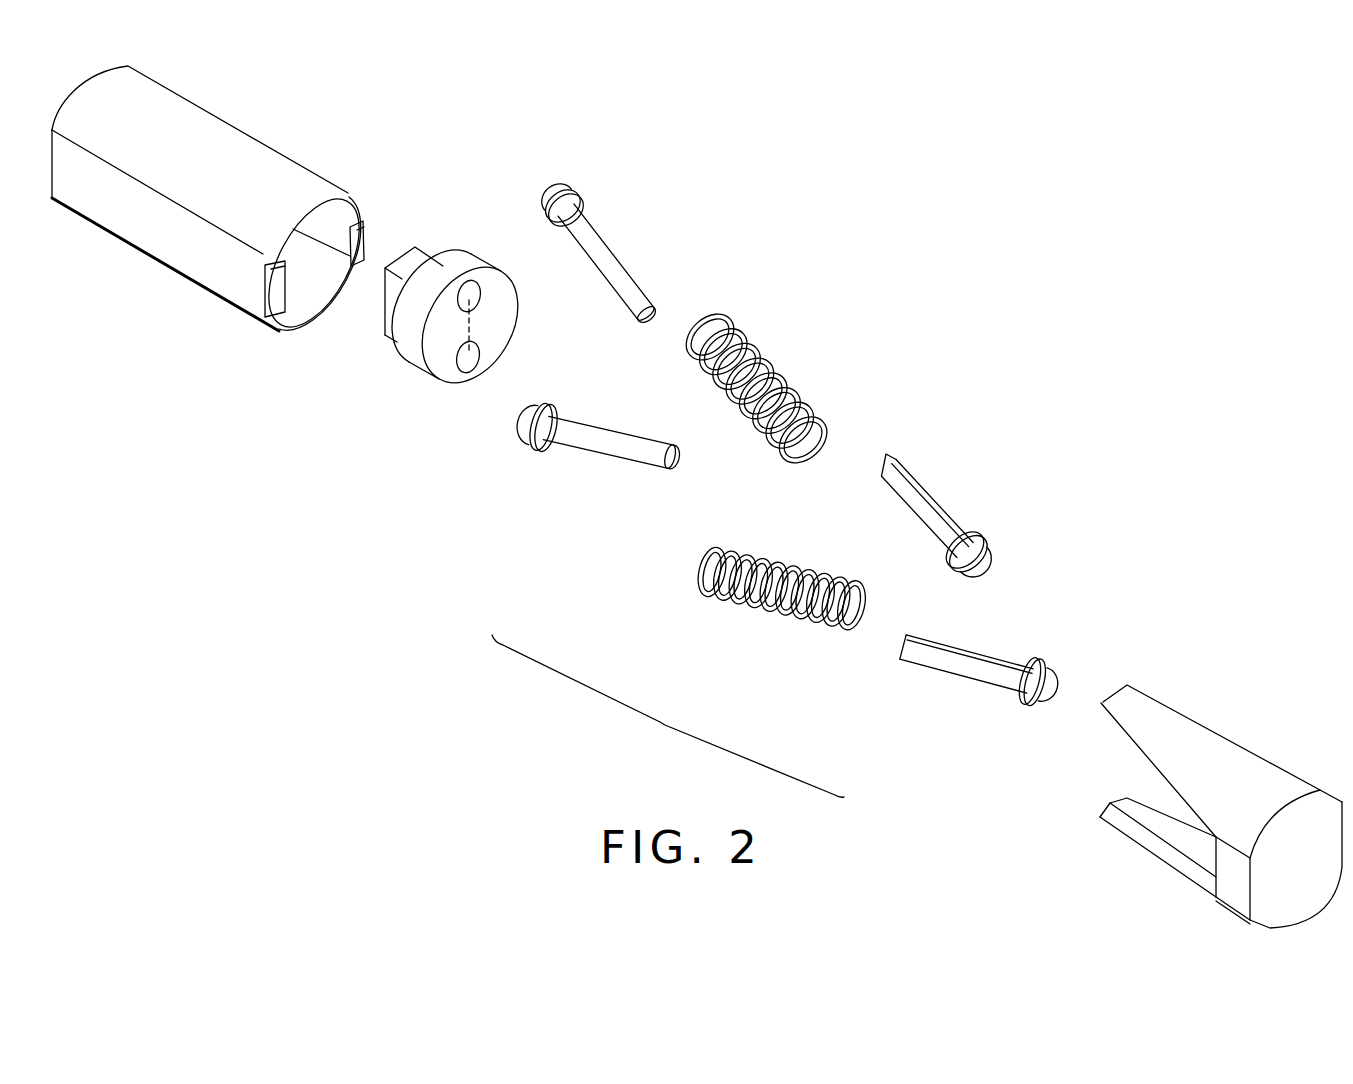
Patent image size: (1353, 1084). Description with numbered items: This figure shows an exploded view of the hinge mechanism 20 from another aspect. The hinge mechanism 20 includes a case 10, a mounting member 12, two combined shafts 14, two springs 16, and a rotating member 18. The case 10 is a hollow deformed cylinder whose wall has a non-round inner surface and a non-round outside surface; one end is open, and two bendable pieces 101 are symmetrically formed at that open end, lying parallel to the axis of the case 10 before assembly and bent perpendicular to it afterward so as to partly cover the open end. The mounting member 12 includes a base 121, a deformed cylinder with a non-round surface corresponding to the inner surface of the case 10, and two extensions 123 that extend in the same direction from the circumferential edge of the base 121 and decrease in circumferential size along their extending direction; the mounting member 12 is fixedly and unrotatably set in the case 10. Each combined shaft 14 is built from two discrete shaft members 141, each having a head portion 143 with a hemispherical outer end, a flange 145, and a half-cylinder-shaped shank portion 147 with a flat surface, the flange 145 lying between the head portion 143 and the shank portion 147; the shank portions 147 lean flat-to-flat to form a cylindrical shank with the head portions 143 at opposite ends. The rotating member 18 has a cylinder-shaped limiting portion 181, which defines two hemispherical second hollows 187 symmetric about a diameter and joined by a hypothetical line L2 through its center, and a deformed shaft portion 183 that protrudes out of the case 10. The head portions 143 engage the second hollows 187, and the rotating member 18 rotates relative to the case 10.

The hinge mechanism 20 is at (692, 90).
The case 10 is at (215, 213).
The pieces 101 is at (276, 290).
The rotating member 18 is at (425, 320).
The limiting portion 181 is at (411, 346).
The deformed shaft portion 183 is at (416, 258).
The second hollows 187 is at (469, 368).
The hypothetical line L2 is at (471, 322).
The combined shaft 14 is at (815, 599).
The shaft member 141 is at (595, 479).
The head portion 143 is at (1053, 683).
The flange 145 is at (1033, 660).
The shank portion 147 is at (971, 668).
The springs 16 is at (752, 355).
The mounting member 12 is at (1221, 795).
The base 121 is at (1242, 877).
The extensions 123 is at (1158, 733).